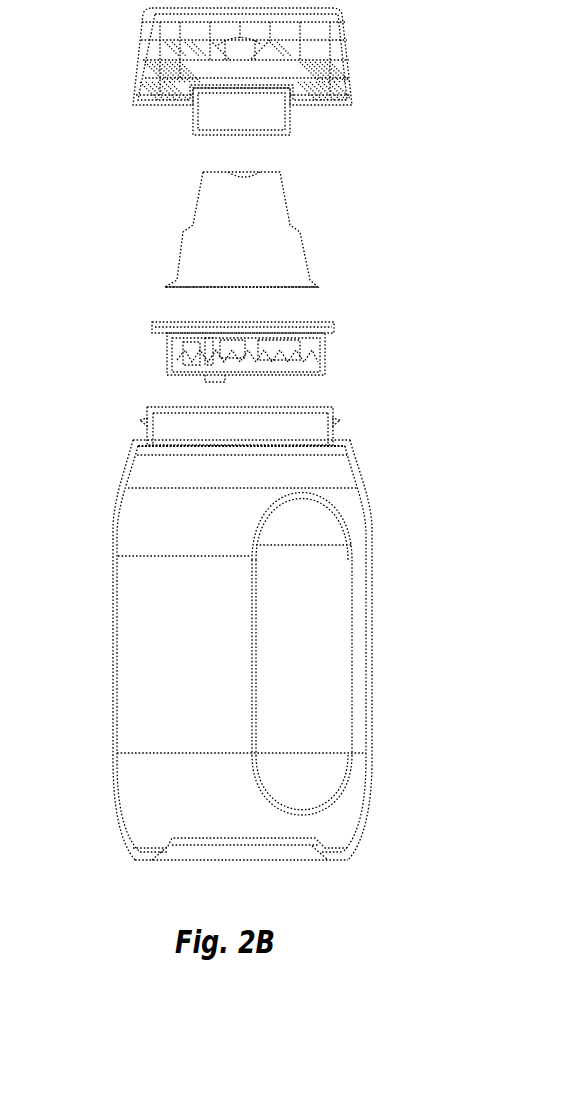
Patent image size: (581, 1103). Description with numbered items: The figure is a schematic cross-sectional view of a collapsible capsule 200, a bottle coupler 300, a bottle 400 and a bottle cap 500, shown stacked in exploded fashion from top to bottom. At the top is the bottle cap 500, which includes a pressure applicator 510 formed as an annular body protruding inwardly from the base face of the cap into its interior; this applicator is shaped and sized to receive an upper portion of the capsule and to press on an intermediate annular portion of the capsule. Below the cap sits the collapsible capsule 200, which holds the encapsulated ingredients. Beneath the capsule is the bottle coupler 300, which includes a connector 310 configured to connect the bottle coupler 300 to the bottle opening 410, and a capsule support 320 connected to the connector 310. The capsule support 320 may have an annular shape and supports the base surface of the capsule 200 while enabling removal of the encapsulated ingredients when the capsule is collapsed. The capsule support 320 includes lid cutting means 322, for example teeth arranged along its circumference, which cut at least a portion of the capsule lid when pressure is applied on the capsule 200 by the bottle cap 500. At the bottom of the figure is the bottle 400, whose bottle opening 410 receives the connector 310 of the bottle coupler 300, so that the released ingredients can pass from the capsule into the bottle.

The bottle cap 500 is at (138, 50).
The pressure applicator 510 is at (193, 115).
The collapsible capsule 200 is at (190, 240).
The bottle coupler 300 is at (201, 349).
The connector 310 is at (155, 330).
The capsule support 320 is at (185, 372).
The lid cutting means 322 is at (292, 360).
The bottle 400 is at (286, 617).
The bottle opening 410 is at (318, 434).